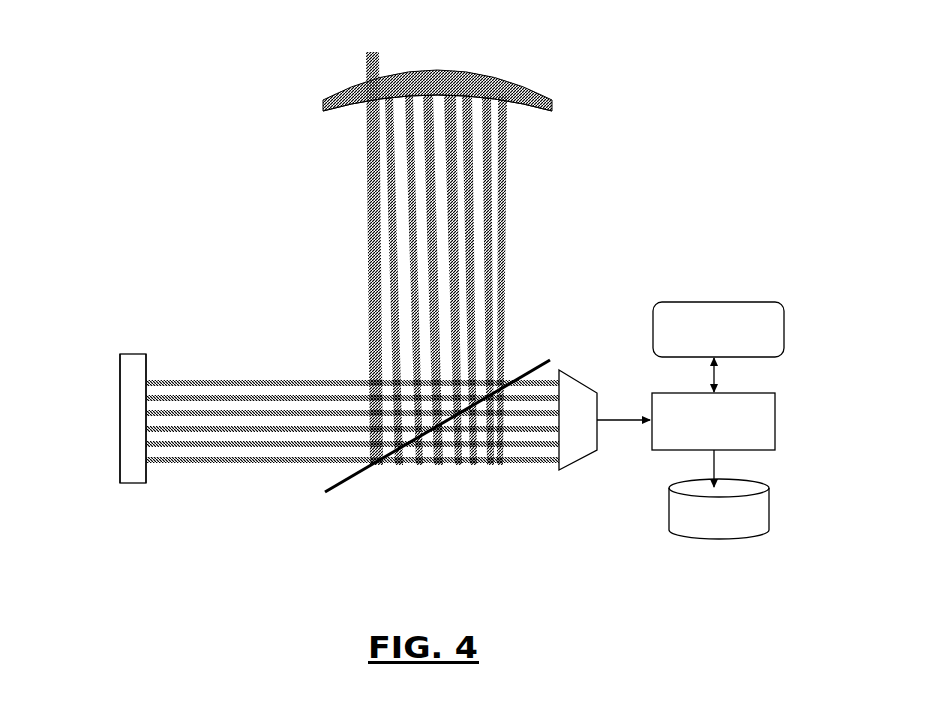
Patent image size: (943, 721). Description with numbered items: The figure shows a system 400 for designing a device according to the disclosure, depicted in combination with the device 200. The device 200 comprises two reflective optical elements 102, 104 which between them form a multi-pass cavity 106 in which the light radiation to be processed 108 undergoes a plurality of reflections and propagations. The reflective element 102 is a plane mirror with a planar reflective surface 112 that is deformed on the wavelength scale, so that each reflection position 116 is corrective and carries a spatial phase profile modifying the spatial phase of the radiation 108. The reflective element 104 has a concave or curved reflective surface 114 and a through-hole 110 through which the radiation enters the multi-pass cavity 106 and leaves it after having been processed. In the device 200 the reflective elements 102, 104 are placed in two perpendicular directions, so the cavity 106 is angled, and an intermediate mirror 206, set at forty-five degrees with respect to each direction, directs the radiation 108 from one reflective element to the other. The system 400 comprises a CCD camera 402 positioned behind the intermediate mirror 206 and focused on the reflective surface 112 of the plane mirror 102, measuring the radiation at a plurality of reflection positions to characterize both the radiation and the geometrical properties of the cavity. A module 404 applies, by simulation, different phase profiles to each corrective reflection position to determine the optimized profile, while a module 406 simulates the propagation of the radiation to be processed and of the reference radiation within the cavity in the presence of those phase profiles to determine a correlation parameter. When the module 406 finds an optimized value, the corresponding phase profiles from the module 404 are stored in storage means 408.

The system 400 is at (114, 67).
The device 200 is at (263, 156).
The multi-pass cavity 106 is at (229, 231).
The reflective element 102 is at (106, 356).
The planar reflective surface 112 is at (148, 363).
The reflection position 116 is at (120, 477).
The light radiation to be processed 108 is at (360, 55).
The through-hole 110 is at (372, 90).
The reflective element 104 is at (522, 92).
The concave or curved reflective surface 114 is at (520, 108).
The intermediate mirror 206 is at (548, 360).
The CCD camera 402 is at (590, 384).
The module 404 is at (777, 421).
The module 406 is at (752, 302).
The storage means 408 is at (769, 505).